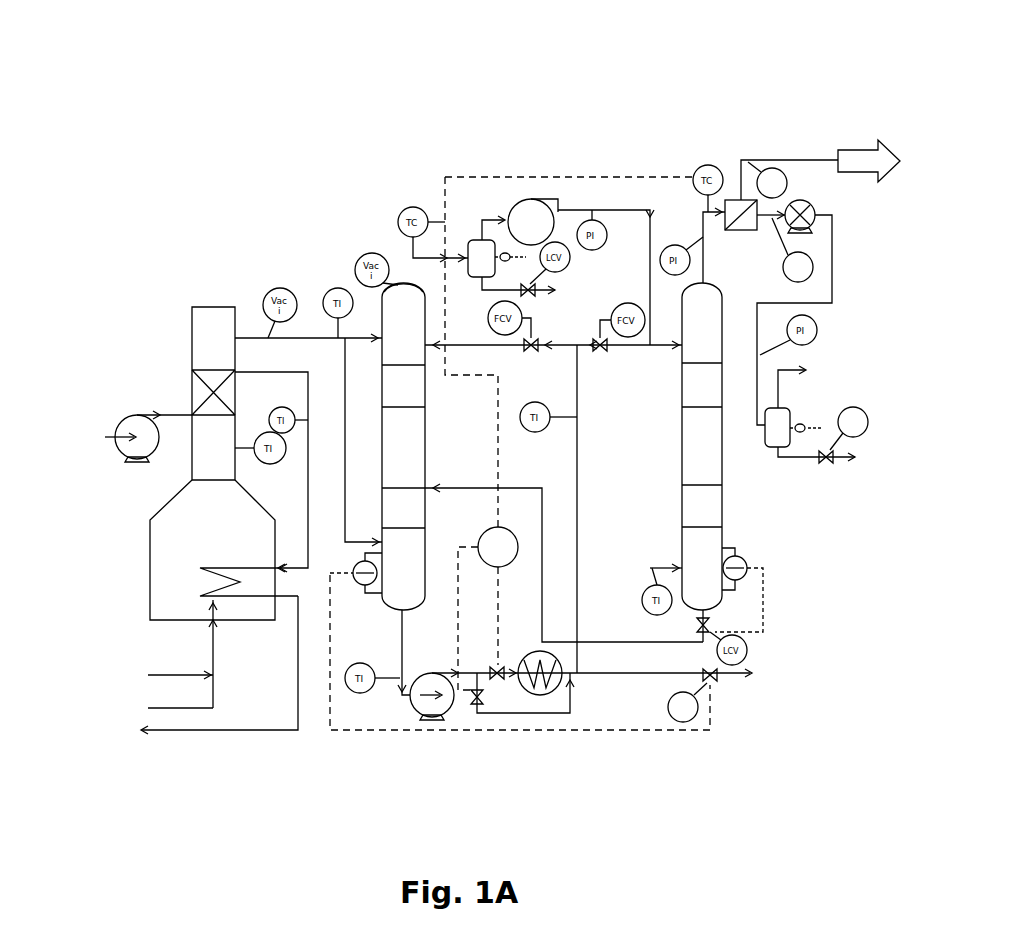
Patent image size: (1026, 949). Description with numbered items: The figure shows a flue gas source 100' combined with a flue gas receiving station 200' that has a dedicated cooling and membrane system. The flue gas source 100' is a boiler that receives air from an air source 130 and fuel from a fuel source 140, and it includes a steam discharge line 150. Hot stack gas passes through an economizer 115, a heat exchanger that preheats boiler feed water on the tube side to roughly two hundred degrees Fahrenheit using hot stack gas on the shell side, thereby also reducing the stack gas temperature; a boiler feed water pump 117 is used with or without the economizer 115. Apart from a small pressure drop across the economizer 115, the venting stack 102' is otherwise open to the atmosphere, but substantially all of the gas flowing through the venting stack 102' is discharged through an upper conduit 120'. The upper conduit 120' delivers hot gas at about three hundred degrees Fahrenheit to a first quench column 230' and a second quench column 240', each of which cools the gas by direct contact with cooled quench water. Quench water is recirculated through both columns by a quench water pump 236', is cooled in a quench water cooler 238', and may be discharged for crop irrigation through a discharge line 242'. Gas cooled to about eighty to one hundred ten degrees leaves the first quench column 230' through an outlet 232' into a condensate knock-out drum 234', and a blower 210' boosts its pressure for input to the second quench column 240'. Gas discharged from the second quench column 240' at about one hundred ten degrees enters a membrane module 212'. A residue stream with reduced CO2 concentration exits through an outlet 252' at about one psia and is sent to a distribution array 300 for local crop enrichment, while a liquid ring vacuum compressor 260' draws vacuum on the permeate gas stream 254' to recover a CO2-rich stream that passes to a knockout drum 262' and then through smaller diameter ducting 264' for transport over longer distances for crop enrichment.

The flue gas source 100' is at (155, 550).
The venting stack 102' is at (178, 359).
The economizer 115 is at (185, 390).
The boiler feed water pump 117 is at (120, 412).
The upper conduit 120' is at (307, 292).
The air source 130 is at (151, 678).
The fuel source 140 is at (151, 708).
The steam discharge line 150 is at (194, 669).
The flue gas receiving station 200' is at (520, 375).
The blower 210' is at (581, 230).
The membrane module 212' is at (745, 164).
The first quench column 230' is at (358, 419).
The outlet 232' is at (384, 235).
The condensate knock-out drum 234' is at (500, 201).
The quench water pump 236' is at (379, 735).
The quench water cooler 238' is at (537, 722).
The second quench column 240' is at (780, 446).
The discharge line 242' is at (747, 701).
The outlet 252' is at (791, 156).
The permeate gas stream 254' is at (776, 247).
The liquid ring vacuum compressor 260' is at (846, 312).
The knockout drum 262' is at (824, 418).
The smaller diameter ducting 264' is at (837, 368).
The distribution array 300 is at (869, 161).